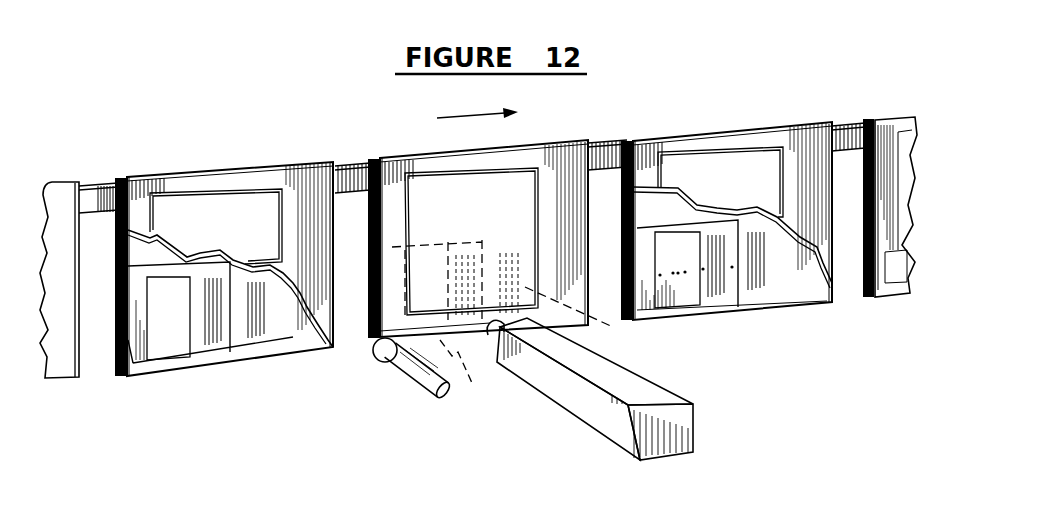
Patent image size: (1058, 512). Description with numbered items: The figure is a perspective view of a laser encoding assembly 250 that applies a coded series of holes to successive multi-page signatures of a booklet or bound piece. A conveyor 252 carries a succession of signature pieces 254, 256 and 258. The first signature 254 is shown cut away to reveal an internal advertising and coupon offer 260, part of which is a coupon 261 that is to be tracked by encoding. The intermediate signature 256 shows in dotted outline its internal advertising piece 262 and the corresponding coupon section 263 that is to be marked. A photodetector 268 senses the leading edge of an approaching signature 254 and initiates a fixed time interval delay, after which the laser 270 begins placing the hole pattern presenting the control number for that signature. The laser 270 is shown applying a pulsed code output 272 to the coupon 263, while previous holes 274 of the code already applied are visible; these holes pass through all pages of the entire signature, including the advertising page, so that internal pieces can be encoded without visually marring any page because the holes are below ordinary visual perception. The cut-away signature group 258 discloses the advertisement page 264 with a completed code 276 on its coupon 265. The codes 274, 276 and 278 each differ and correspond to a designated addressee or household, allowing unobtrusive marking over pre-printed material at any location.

The assembly 250 is at (240, 128).
The conveyor 252 is at (347, 160).
The signature 254 is at (243, 249).
The intermediate signature 256 is at (510, 220).
The cut-away signature group 258 is at (758, 201).
The internal advertising and coupon offer 260 is at (273, 333).
The coupon 261 is at (163, 350).
The internal advertising piece 262 is at (585, 321).
The coupon section 263 is at (472, 374).
The advertisement page 264 is at (772, 283).
The coupon 265 is at (680, 306).
The photodetector 268 is at (408, 378).
The laser 270 is at (613, 428).
The pulsed code output 272 is at (485, 345).
The previous holes 274 is at (467, 312).
The code 276 is at (682, 276).
The code 278 is at (884, 298).